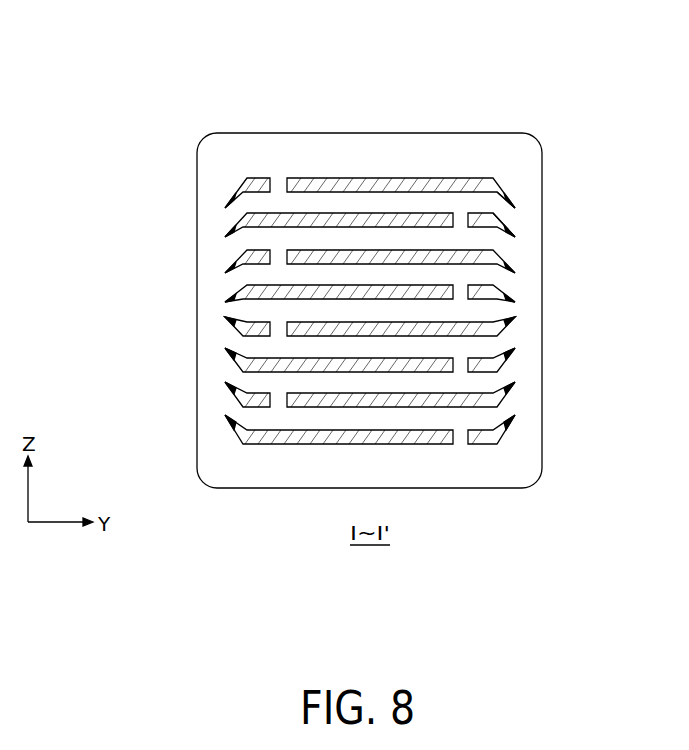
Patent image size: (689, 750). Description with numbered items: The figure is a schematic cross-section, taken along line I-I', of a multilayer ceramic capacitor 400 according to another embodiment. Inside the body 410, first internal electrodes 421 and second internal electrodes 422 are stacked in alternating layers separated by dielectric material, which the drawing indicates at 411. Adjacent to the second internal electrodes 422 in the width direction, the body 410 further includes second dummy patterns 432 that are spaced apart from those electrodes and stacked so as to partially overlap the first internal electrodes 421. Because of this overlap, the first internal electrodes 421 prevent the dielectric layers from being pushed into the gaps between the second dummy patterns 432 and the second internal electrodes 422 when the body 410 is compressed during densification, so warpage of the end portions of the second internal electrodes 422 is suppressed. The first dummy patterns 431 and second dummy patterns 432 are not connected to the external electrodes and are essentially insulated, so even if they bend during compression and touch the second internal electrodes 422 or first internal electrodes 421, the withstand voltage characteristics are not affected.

The multilayer ceramic capacitor 400 is at (276, 62).
The body 410 is at (388, 111).
The opening 411 is at (503, 210).
The first internal electrodes 421 is at (497, 180).
The second internal electrodes 422 is at (243, 218).
The first dummy patterns 431 is at (245, 184).
The second dummy patterns 432 is at (503, 228).